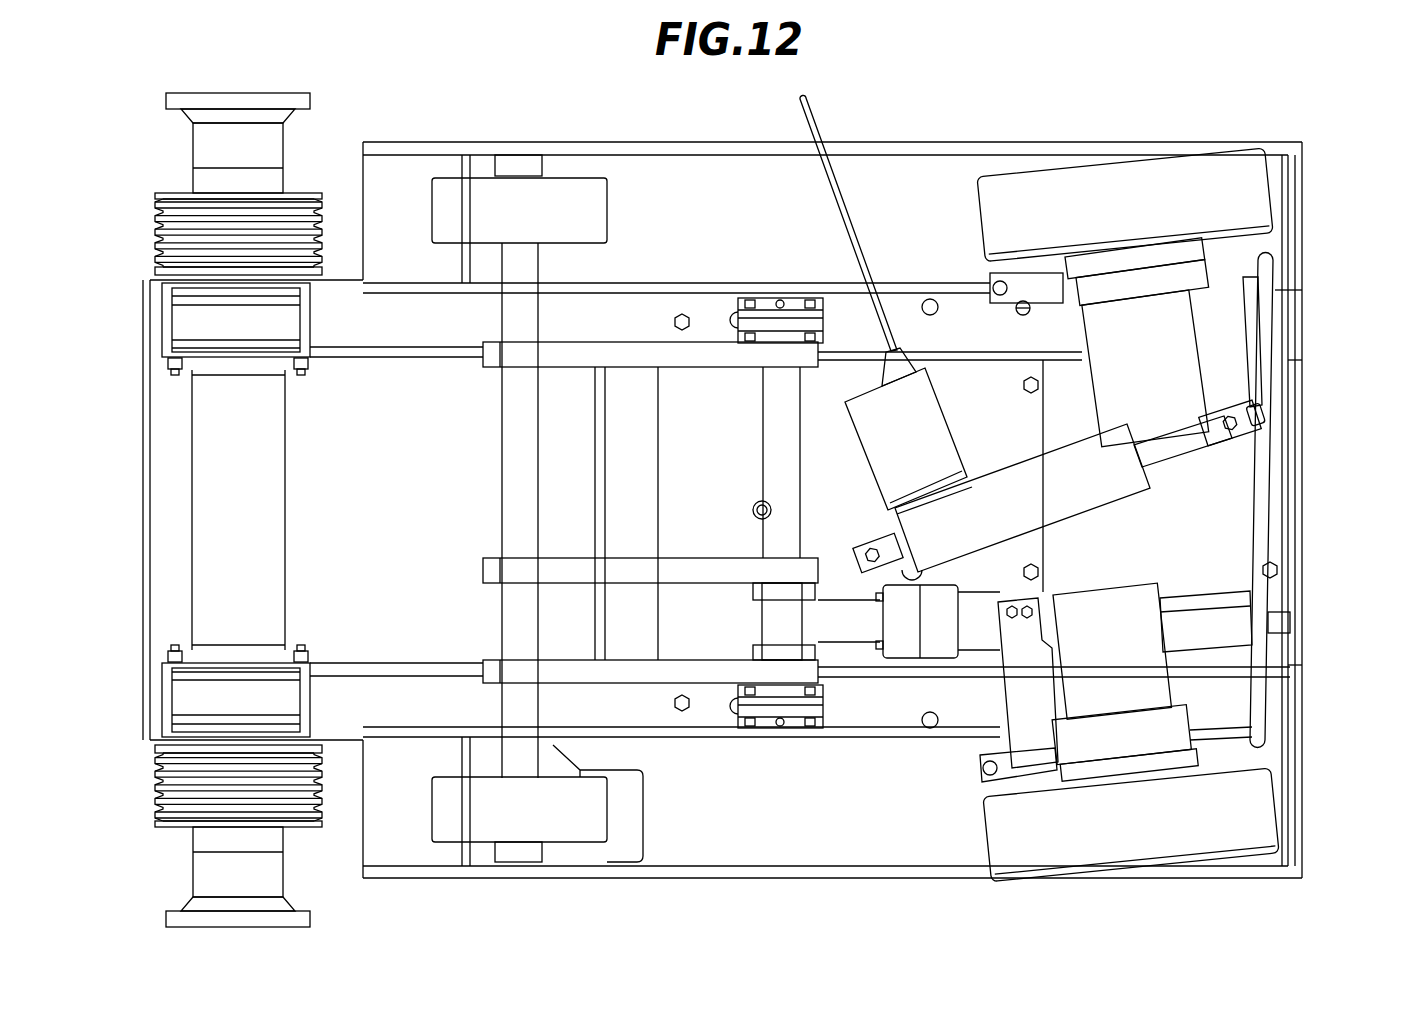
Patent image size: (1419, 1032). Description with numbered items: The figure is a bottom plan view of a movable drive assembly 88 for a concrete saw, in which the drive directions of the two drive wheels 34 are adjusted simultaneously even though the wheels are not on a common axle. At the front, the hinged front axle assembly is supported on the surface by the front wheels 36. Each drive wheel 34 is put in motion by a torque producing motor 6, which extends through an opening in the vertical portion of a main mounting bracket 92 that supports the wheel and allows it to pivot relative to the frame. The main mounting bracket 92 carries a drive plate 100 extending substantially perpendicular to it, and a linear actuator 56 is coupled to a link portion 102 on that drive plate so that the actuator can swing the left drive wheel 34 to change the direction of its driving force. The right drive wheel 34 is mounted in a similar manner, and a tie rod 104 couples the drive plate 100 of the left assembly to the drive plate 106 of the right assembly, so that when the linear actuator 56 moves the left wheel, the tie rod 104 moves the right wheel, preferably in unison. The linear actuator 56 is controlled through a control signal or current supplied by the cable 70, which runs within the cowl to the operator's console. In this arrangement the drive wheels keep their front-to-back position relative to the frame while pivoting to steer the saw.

The movable drive assembly 88 is at (1022, 122).
The front wheels 36 is at (570, 205).
The cable 70 is at (833, 204).
The drive wheels 34 is at (1240, 172).
The main mounting bracket 92 is at (1190, 260).
The drive plate 100 is at (1230, 320).
The link portion 102 is at (1265, 407).
The tie rod 104 is at (1265, 472).
The linear actuator 56 is at (1030, 497).
The drive plate 106 is at (1027, 700).
The motors 6 is at (1145, 510).